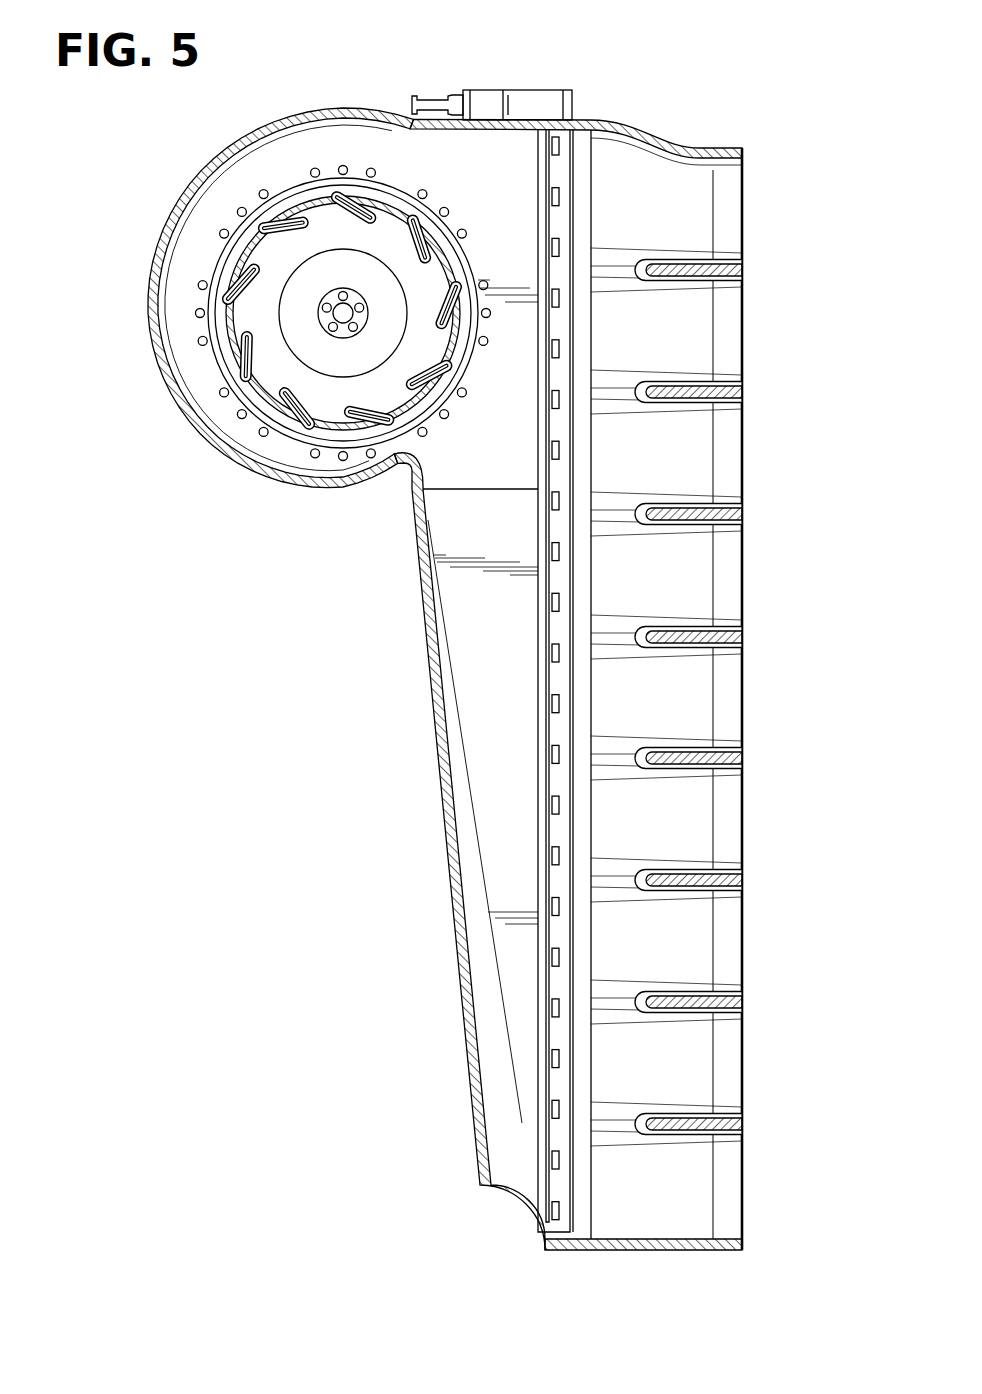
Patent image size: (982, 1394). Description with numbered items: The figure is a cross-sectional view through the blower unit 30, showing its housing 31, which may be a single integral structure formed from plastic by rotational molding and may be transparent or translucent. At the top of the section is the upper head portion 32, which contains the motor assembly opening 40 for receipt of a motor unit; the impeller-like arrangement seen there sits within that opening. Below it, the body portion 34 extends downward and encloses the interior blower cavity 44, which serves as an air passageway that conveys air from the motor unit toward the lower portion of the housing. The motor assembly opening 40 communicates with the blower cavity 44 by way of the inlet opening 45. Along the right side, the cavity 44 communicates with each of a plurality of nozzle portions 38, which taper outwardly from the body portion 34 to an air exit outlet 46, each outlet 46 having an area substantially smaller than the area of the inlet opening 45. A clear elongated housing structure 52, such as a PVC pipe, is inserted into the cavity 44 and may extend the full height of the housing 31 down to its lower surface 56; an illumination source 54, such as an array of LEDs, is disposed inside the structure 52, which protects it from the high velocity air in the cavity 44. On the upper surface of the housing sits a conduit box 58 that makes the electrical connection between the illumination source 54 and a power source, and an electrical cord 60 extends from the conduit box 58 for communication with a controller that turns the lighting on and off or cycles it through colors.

The blower unit 30 is at (692, 108).
The housing 31 is at (590, 120).
The upper head portion 32 is at (362, 111).
The body portion 34 is at (411, 657).
The nozzle portions 38 is at (703, 603).
The motor assembly opening 40 is at (333, 195).
The interior blower cavity 44 is at (499, 766).
The inlet opening 45 is at (475, 487).
The air exit outlet 46 is at (745, 852).
The elongated housing structure 52 is at (583, 170).
The illumination source 54 is at (557, 345).
The lower surface 56 is at (630, 1252).
The conduit box 58 is at (527, 92).
The electrical cord 60 is at (428, 97).